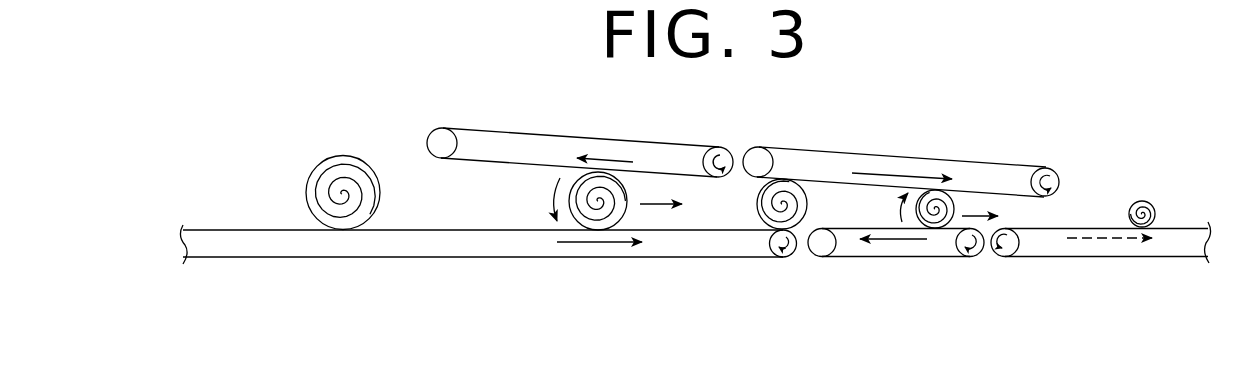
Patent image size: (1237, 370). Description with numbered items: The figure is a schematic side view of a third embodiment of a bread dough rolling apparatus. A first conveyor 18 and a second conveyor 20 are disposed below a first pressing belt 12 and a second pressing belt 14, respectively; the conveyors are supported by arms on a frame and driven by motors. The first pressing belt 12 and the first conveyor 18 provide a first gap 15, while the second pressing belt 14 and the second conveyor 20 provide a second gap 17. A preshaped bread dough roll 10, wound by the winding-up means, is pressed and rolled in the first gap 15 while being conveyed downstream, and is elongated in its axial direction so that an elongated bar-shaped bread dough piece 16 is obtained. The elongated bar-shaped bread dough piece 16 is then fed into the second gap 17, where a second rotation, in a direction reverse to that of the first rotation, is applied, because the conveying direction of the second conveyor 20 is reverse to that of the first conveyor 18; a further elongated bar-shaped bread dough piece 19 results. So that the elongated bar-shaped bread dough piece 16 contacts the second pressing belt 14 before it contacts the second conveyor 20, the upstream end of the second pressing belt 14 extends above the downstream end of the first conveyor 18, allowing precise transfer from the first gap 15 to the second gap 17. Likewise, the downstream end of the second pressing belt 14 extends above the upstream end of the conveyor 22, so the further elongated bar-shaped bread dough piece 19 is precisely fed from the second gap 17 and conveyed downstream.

The preshaped bread dough roll 10 is at (313, 172).
The first pressing belt 12 is at (663, 141).
The second pressing belt 14 is at (950, 157).
The first gap 15 is at (492, 208).
The elongated bar-shaped bread dough piece 16 is at (758, 205).
The second gap 17 is at (827, 210).
The first conveyor 18 is at (340, 258).
The further elongated bar-shaped bread dough piece 19 is at (953, 207).
The second conveyor 20 is at (910, 257).
The conveyor 22 is at (1087, 257).